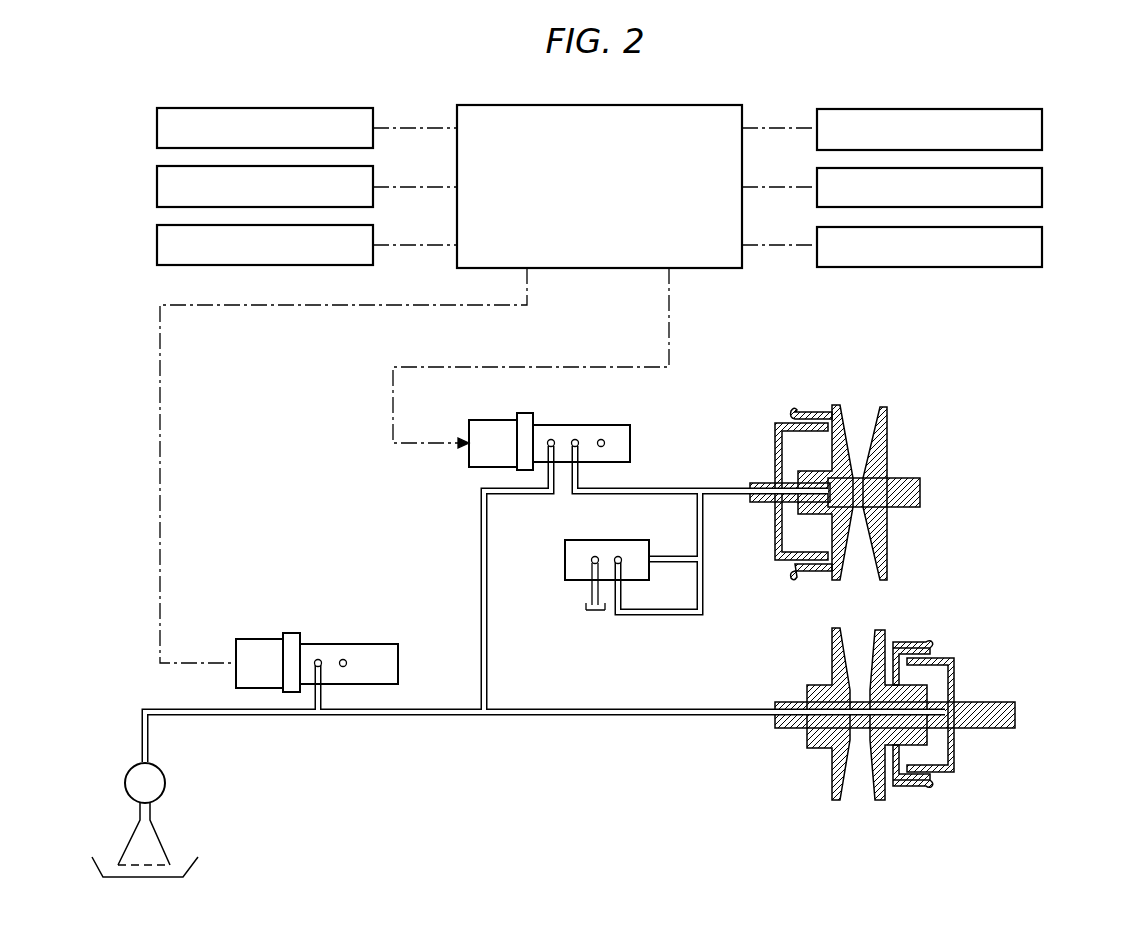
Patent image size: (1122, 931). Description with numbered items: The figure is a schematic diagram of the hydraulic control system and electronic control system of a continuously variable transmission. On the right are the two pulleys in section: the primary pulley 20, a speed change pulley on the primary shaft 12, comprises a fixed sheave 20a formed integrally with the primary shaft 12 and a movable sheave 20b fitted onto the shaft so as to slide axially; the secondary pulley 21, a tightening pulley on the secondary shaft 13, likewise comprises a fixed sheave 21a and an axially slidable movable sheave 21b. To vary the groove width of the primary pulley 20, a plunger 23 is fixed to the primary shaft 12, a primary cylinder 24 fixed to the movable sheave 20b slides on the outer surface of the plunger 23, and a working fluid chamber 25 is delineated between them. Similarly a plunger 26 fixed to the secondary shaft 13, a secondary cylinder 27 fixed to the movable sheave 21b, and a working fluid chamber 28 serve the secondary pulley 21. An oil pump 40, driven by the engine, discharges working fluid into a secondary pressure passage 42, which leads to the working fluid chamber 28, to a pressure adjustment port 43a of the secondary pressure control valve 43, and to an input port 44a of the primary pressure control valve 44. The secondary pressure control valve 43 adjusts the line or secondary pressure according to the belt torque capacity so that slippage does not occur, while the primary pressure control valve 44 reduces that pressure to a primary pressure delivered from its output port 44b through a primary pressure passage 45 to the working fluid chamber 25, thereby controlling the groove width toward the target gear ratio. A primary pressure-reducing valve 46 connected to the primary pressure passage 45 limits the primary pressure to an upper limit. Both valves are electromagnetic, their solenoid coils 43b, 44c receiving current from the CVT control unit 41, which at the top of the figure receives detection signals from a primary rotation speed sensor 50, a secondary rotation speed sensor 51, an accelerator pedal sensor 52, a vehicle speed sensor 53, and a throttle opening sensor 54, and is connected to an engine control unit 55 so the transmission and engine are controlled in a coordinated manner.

The primary shaft 12 is at (920, 492).
The secondary shaft 13 is at (1015, 718).
The primary pulley 20 is at (849, 449).
The fixed sheave 20a is at (882, 468).
The movable sheave 20b is at (836, 403).
The secondary pulley 21 is at (867, 750).
The fixed sheave 21a is at (838, 800).
The movable sheave 21b is at (892, 735).
The plunger 23 is at (775, 523).
The primary cylinder 24 is at (806, 411).
The working fluid chamber 25 is at (780, 565).
The plunger 26 is at (955, 682).
The secondary cylinder 27 is at (905, 643).
The working fluid chamber 28 is at (946, 668).
The oil pump 40 is at (142, 792).
The CVT control unit 41 is at (465, 105).
The secondary pressure passage 42 is at (244, 718).
The secondary pressure control valve 43 is at (343, 640).
The pressure adjustment port 43a is at (318, 659).
The solenoid coil 43b is at (263, 640).
The primary pressure control valve 44 is at (580, 421).
The input port 44a is at (552, 439).
The output port 44b is at (576, 439).
The solenoid coil 44c is at (480, 421).
The primary pressure passage 45 is at (665, 488).
The primary pressure-reducing valve 46 is at (554, 593).
The primary rotation speed sensor 50 is at (1043, 188).
The secondary rotation speed sensor 51 is at (1043, 246).
The accelerator pedal sensor 52 is at (157, 128).
The vehicle speed sensor 53 is at (157, 187).
The throttle opening sensor 54 is at (157, 245).
The engine control unit 55 is at (1043, 130).